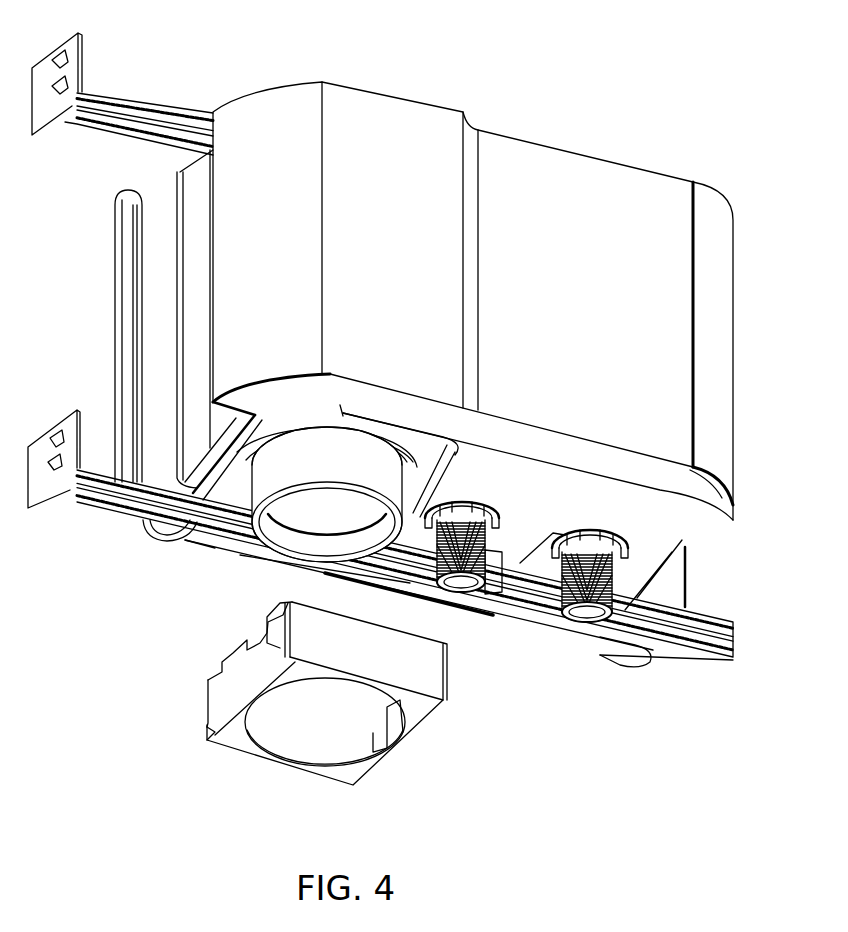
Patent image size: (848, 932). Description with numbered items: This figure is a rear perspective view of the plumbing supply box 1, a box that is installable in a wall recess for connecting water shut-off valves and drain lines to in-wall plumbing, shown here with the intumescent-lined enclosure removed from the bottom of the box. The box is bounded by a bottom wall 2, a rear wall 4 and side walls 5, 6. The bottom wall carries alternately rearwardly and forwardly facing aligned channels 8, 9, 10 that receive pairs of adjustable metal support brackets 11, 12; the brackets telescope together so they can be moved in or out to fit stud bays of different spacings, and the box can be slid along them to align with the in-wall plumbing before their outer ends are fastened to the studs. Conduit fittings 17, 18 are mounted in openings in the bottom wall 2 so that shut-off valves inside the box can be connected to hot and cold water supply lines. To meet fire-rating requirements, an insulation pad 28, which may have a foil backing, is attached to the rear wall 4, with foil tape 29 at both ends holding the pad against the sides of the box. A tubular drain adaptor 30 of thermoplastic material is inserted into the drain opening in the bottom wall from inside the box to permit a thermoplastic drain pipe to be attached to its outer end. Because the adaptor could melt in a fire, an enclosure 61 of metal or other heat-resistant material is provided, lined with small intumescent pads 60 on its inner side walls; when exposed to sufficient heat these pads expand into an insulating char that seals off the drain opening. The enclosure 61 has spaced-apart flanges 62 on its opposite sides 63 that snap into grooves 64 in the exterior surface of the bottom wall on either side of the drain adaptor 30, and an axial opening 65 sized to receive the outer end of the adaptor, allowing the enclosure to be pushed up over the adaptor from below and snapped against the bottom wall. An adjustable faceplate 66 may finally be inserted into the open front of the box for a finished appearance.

The plumbing supply box 1 is at (515, 105).
The bottom wall 2 is at (655, 542).
The rear wall 4 is at (527, 460).
The side wall 5 is at (700, 523).
The side wall 6 is at (222, 522).
The channel 8 is at (583, 635).
The channel 9 is at (425, 587).
The channel 10 is at (221, 545).
The adjustable metal support bracket 11 is at (700, 645).
The adjustable metal support bracket 12 is at (130, 112).
The conduit fitting 17 is at (655, 598).
The conduit fitting 18 is at (470, 545).
The insulation pad 28 is at (585, 180).
The foil tape 29 is at (262, 108).
The tubular drain adaptor 30 is at (382, 462).
The intumescent pad 60 is at (392, 735).
The enclosure 61 is at (440, 727).
The flange 62 is at (232, 655).
The side 63 is at (217, 693).
The groove 64 is at (213, 510).
The axial opening 65 is at (275, 752).
The adjustable faceplate 66 is at (128, 276).